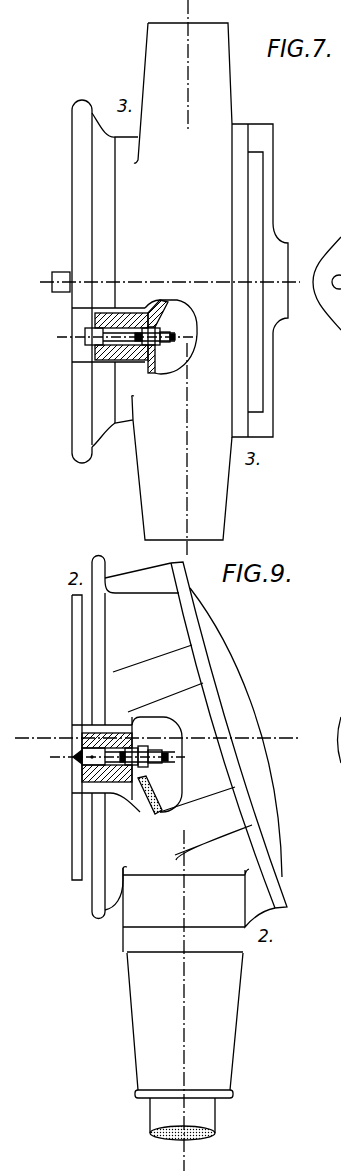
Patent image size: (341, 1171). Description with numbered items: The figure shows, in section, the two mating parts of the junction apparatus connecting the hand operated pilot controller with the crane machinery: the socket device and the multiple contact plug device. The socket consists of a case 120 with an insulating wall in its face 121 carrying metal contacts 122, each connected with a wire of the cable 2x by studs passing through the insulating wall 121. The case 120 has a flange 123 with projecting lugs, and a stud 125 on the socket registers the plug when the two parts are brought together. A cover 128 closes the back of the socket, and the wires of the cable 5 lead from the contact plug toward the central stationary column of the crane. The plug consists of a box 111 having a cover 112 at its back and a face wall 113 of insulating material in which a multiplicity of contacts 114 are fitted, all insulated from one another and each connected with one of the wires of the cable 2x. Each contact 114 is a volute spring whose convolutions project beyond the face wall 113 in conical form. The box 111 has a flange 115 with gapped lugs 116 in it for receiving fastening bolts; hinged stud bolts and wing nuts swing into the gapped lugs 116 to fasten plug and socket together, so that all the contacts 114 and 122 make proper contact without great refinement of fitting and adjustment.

In FIG. 7, the case 120 is at (213, 147).
In FIG. 7, the flange 123 is at (80, 213).
In FIG. 7, the stud 125 is at (62, 275).
In FIG. 7, the insulating wall 121 is at (95, 352).
In FIG. 7, the metal contacts 122 is at (83, 336).
In FIG. 7, the wires of the cable 5 is at (160, 315).
In FIG. 7, the cover 128 is at (265, 345).
In FIG. 9, the box 111 is at (140, 585).
In FIG. 9, the flange 115 is at (95, 617).
In FIG. 9, the cover 112 is at (250, 725).
In FIG. 9, the gapped lugs 116 is at (340, 740).
In FIG. 9, the face wall 113 is at (80, 778).
In FIG. 9, the contacts 114 is at (75, 756).
In FIG. 9, the cable 2x is at (172, 1118).